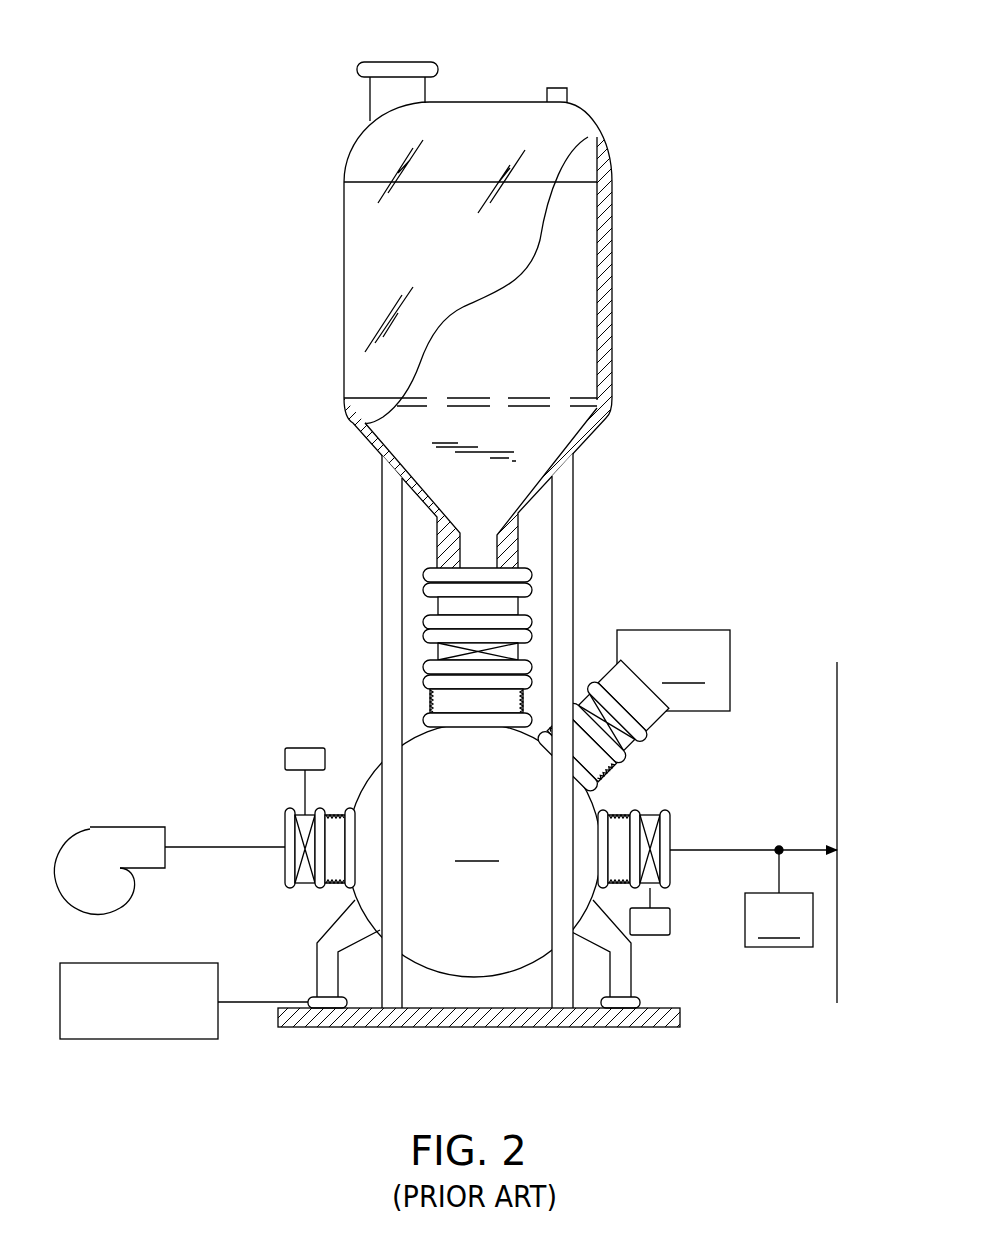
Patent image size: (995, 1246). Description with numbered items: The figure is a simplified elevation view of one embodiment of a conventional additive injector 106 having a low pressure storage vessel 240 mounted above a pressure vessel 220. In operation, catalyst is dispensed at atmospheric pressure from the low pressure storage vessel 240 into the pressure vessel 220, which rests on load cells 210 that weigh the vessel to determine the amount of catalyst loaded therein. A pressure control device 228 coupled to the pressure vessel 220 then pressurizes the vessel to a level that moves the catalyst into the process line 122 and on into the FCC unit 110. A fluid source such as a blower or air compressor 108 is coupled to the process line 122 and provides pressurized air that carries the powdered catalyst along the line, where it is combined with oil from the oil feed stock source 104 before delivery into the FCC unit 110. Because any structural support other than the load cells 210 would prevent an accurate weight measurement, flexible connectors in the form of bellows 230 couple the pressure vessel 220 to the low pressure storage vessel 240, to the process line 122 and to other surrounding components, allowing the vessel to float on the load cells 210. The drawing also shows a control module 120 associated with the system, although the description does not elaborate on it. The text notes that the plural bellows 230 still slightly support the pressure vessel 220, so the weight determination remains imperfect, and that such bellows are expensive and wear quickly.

The additive injector 106 is at (411, 556).
The low pressure storage vessel 240 is at (365, 258).
The bellows 230 is at (427, 693).
The pressure vessel 220 is at (474, 850).
The pressure control device 228 is at (673, 670).
The load cells 210 is at (347, 1003).
The blower or air compressor 108 is at (73, 832).
The process line 122 is at (248, 848).
The oil feed stock source 104 is at (779, 898).
The FCC unit 110 is at (874, 832).
The control module 120 is at (106, 1039).